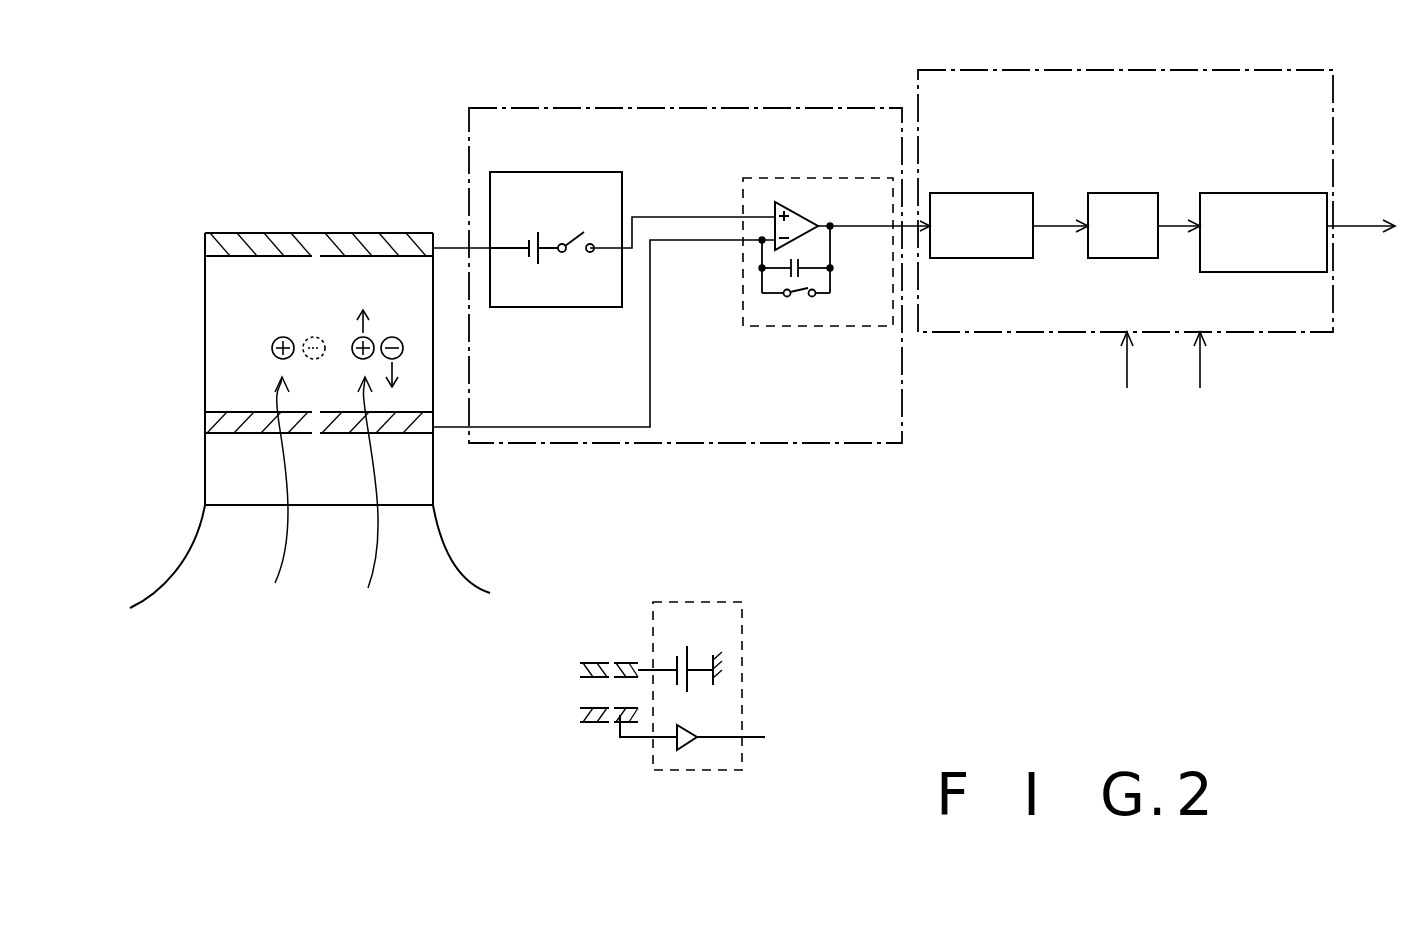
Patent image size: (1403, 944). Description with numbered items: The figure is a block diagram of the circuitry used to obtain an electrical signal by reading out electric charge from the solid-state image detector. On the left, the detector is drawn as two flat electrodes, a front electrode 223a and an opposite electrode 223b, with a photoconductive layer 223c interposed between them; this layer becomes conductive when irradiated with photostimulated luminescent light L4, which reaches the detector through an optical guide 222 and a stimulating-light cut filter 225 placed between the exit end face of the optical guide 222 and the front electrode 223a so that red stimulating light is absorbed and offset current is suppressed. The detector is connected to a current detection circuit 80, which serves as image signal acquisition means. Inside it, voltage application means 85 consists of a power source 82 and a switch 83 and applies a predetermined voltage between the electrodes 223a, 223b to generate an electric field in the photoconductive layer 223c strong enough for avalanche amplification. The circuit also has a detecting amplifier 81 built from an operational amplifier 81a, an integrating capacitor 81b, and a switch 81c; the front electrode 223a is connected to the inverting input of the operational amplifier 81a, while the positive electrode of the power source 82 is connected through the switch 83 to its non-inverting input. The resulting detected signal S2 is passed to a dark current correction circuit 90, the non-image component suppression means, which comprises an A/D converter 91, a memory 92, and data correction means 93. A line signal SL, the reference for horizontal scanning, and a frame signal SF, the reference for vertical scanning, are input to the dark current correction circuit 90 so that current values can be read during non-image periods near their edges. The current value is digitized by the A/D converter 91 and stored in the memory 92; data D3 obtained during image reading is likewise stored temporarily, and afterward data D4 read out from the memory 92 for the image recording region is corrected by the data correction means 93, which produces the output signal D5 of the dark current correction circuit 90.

The flat electrode 223b is at (215, 247).
The photoconductive layer 223c is at (213, 340).
The front electrode 223a is at (212, 425).
The stimulating-light cut filter 225 is at (220, 481).
The optical guide 222 is at (190, 568).
The photostimulated luminescent light L4 is at (282, 556).
The current detection circuit 80 is at (825, 107).
The voltage application means 85 is at (622, 195).
The power source 82 is at (535, 263).
The switch 83 is at (583, 229).
The detecting amplifier 81 is at (838, 330).
The operational amplifier 81a is at (806, 206).
The integrating capacitor 81b is at (806, 278).
The switch 81c is at (806, 311).
The detected signal S2 is at (907, 295).
The dark current correction circuit 90 is at (1236, 70).
The A/D converter 91 is at (1005, 193).
The memory 92 is at (1148, 193).
The data correction means 93 is at (1265, 193).
The data obtained during image reading D3 is at (1060, 228).
The data read out from the memory D4 is at (1178, 228).
The output signal D5 is at (1361, 217).
The line signal SL is at (1127, 371).
The frame signal SF is at (1200, 370).